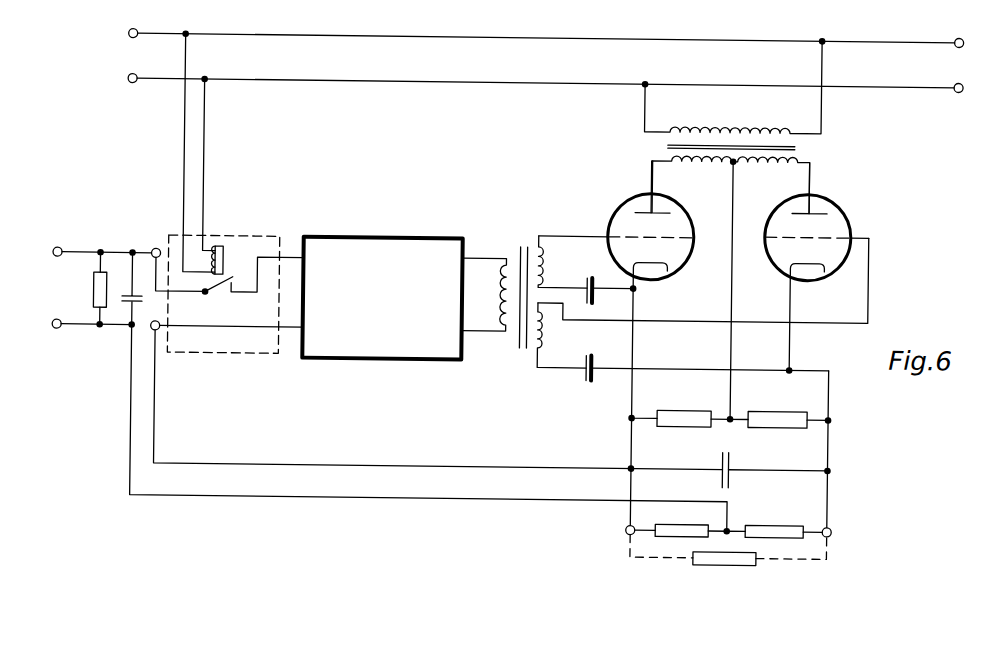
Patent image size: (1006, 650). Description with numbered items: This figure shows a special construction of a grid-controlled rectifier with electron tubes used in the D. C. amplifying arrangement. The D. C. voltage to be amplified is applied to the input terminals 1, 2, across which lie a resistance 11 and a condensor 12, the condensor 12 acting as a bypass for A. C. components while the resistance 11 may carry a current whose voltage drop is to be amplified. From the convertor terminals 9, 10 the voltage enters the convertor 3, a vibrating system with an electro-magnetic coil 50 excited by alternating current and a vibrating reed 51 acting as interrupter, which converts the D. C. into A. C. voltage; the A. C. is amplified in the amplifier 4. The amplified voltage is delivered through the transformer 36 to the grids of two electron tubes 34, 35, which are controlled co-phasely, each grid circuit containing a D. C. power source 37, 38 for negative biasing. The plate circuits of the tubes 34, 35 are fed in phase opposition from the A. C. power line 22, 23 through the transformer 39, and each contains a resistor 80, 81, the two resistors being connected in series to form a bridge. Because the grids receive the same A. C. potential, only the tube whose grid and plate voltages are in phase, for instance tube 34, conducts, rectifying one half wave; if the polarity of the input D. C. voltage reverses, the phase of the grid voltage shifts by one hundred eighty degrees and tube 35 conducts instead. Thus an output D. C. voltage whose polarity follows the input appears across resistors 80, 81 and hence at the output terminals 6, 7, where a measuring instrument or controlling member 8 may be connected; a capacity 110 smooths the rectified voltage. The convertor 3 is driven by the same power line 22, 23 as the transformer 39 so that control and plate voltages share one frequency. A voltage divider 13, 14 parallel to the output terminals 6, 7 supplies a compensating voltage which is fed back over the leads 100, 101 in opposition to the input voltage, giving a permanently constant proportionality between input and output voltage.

The input terminal 1 is at (101, 241).
The input terminal 2 is at (92, 336).
The convertor 3 is at (236, 194).
The amplifier 4 is at (382, 298).
The output terminal 6 is at (638, 521).
The output terminal 7 is at (835, 522).
The measuring instrument or controlling member 8 is at (735, 560).
The convertor terminal 9 is at (175, 258).
The convertor terminal 10 is at (221, 314).
The resistance 11 is at (86, 288).
The condensor 12 is at (124, 288).
The voltage divider resistance 13 is at (681, 520).
The voltage divider resistance 14 is at (775, 521).
The A. C. power line 22 is at (563, 40).
The A. C. power line 23 is at (562, 82).
The electron tube 34 is at (662, 226).
The electron tube 35 is at (823, 266).
The transformer 36 is at (665, 291).
The D. C. power source 37 is at (601, 277).
The D. C. power source 38 is at (699, 357).
The transformer 39 is at (742, 229).
The electro-magnetic coil 50 is at (227, 266).
The vibrating reed 51 is at (252, 286).
The resistor 80 is at (681, 358).
The resistor 81 is at (780, 451).
The lead 100 is at (493, 431).
The lead 101 is at (430, 430).
The capacity 110 is at (734, 460).